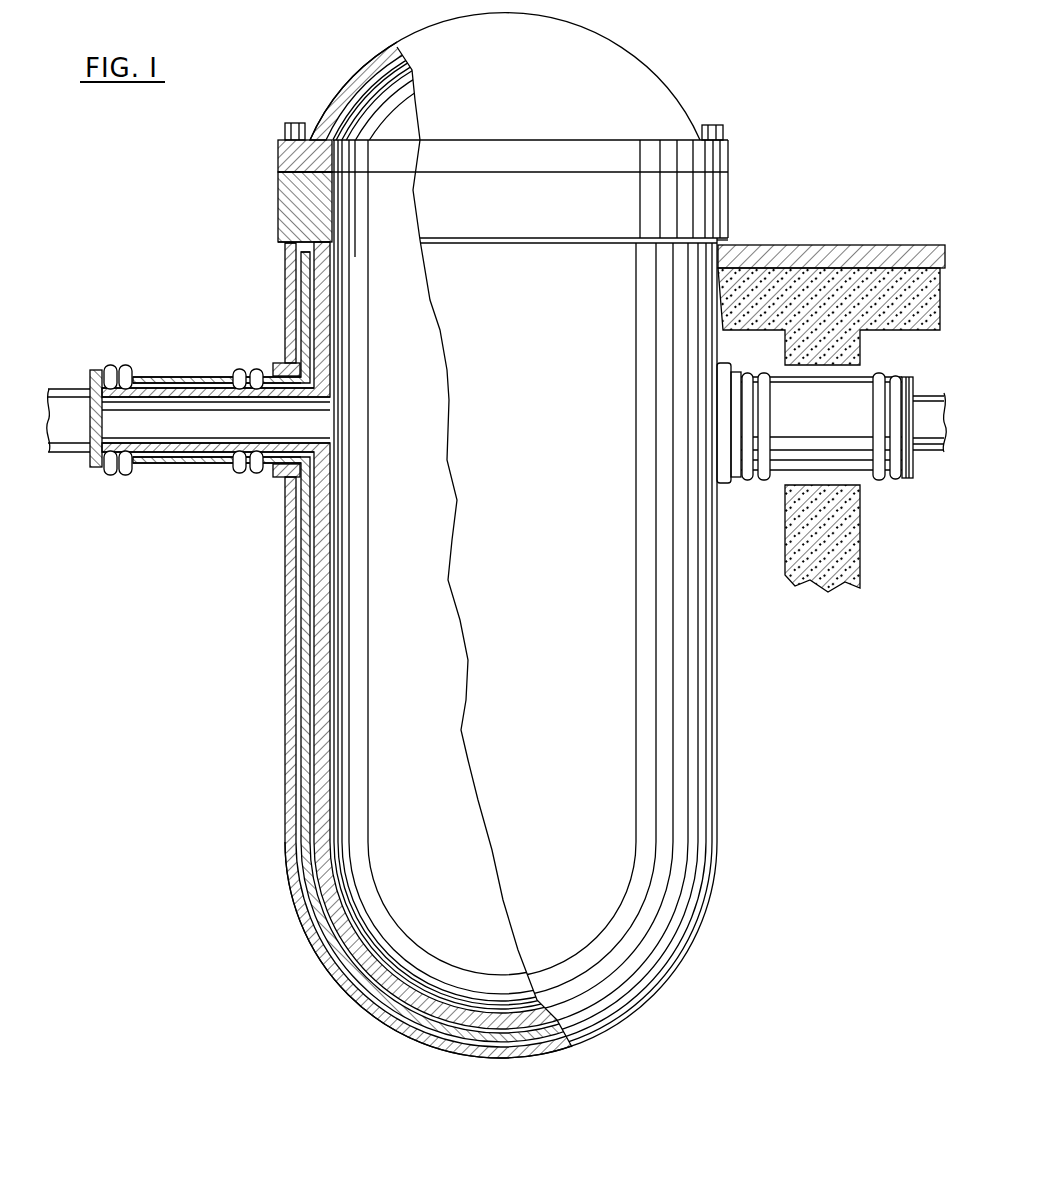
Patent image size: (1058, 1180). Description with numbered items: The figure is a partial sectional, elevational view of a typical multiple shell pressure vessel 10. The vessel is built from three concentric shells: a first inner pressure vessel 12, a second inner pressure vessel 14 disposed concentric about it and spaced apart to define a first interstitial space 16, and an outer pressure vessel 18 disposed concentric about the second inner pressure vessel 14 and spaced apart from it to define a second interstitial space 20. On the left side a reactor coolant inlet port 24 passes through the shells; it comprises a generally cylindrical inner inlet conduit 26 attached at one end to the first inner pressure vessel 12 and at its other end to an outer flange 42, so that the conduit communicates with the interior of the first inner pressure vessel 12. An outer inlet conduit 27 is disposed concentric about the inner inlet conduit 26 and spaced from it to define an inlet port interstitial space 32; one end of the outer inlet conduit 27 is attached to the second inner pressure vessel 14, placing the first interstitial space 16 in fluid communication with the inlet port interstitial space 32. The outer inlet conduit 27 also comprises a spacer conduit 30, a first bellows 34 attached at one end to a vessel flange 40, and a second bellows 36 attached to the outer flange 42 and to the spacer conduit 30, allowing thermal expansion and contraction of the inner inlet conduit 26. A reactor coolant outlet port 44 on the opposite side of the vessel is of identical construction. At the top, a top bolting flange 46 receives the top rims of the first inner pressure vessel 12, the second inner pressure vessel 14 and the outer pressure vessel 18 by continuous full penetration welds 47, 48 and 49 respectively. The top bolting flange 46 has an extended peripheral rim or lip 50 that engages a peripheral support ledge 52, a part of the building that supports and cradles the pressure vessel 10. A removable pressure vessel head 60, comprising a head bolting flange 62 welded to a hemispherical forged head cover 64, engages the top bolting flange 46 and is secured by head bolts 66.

The multiple shell pressure vessel 10 is at (241, 948).
The first inner pressure vessel 12 is at (322, 678).
The second inner pressure vessel 14 is at (306, 692).
The first interstitial space 16 is at (310, 701).
The outer pressure vessel 18 is at (291, 646).
The second interstitial space 20 is at (301, 668).
The reactor coolant inlet port 24 is at (188, 443).
The inner inlet conduit 26 is at (212, 442).
The outer inlet conduit 27 is at (202, 423).
The spacer conduit 30 is at (196, 376).
The inlet port interstitial space 32 is at (207, 378).
The first bellows 34 is at (247, 366).
The second bellows 36 is at (110, 362).
The vessel flange 40 is at (280, 362).
The outer flange 42 is at (96, 422).
The reactor coolant outlet port 44 is at (873, 483).
The top bolting flange 46 is at (283, 206).
The full penetration weld 47 is at (318, 268).
The full penetration weld 48 is at (302, 254).
The full penetration weld 49 is at (287, 246).
The extended peripheral rim or lip 50 is at (288, 243).
The pressure vessel peripheral support ledge 52 is at (835, 246).
The removable pressure vessel head 60 is at (596, 38).
The head bolting flange 62 is at (278, 157).
The hemispherical forged head cover 64 is at (362, 75).
The head bolts 66 is at (290, 122).